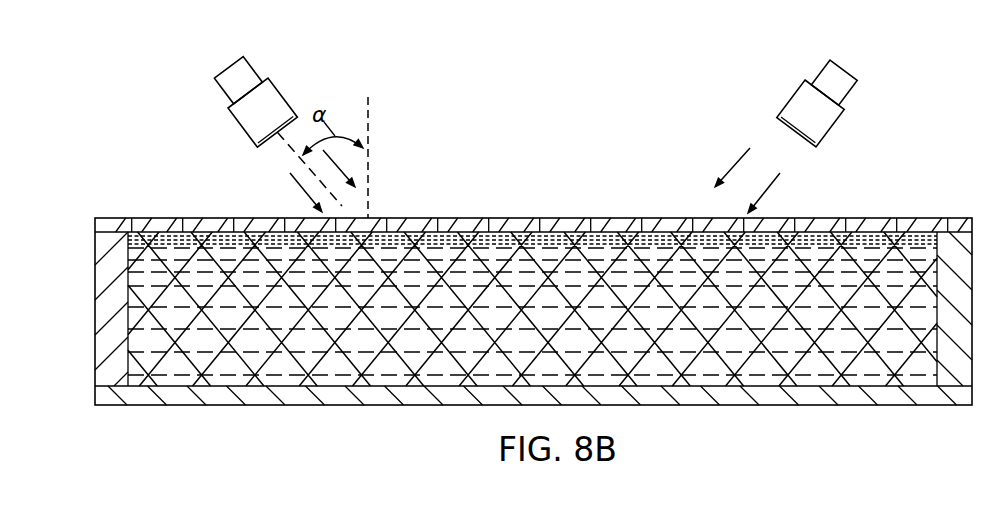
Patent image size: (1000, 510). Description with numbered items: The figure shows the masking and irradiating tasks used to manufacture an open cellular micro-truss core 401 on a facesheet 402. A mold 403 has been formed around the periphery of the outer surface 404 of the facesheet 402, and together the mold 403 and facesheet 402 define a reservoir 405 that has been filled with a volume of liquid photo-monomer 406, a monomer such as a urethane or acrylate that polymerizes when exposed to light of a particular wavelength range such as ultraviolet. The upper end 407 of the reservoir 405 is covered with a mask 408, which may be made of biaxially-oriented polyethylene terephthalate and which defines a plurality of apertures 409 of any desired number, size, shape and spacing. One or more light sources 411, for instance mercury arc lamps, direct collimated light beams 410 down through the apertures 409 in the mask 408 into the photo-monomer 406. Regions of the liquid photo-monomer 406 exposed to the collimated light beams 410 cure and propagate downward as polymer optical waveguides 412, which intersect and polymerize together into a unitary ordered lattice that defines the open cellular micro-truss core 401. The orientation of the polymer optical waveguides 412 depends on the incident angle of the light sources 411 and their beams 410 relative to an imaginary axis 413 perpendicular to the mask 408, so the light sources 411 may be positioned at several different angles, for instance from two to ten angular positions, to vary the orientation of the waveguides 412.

The open cellular micro-truss core 401 is at (775, 335).
The facesheet 402 is at (373, 397).
The mold 403 is at (102, 313).
The outer surface 404 is at (185, 388).
The reservoir 405 is at (180, 250).
The liquid photo-monomer 406 is at (452, 247).
The upper end 407 is at (918, 220).
The mask 408 is at (867, 220).
The apertures 409 is at (347, 216).
The collimated light beams 410 is at (350, 180).
The light sources 411 is at (243, 78).
The polymer optical waveguides 412 is at (727, 367).
The imaginary axis 413 is at (372, 127).